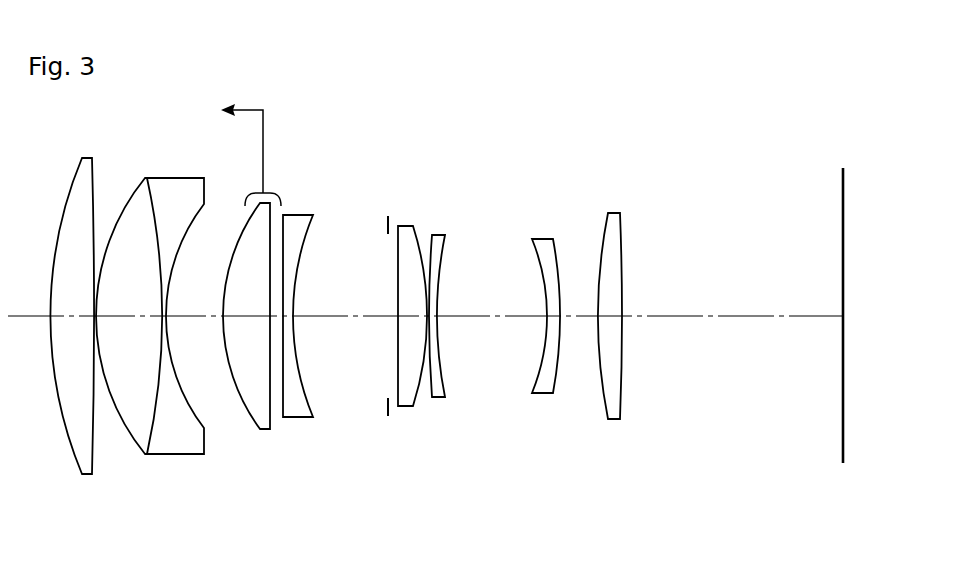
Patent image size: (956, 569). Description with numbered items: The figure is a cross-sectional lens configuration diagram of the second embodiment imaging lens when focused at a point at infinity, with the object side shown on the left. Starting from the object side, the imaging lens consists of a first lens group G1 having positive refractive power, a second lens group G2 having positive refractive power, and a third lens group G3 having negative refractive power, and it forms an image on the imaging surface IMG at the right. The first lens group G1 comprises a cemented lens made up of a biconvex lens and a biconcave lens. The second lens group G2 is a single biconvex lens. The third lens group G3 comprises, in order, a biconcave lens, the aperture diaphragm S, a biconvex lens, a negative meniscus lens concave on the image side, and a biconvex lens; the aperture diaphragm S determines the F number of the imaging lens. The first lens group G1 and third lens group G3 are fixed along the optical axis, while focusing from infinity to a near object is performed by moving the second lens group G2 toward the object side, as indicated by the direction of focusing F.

The first lens group G1 is at (212, 472).
The second lens group G2 is at (284, 429).
The third lens group G3 is at (632, 429).
The aperture diaphragm S is at (388, 216).
The direction of focusing F is at (251, 141).
The imaging surface IMG is at (842, 443).